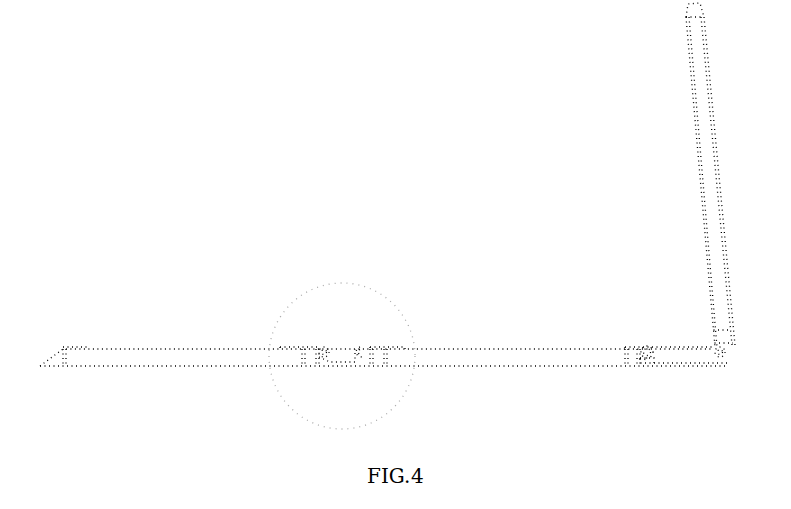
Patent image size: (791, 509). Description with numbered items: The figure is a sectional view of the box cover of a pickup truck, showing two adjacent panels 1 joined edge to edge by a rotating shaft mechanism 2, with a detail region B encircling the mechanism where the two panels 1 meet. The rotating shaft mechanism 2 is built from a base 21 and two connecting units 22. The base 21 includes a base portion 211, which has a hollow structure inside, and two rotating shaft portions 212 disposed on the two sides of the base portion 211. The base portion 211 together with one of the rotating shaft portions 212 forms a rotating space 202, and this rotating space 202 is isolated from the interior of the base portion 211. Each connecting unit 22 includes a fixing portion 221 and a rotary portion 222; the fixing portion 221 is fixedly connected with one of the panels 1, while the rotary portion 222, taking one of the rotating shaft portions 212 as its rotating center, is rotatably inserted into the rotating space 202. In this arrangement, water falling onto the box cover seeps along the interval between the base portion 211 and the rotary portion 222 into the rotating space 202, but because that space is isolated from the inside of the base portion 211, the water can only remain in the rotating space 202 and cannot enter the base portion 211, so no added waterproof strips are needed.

The panel 1 is at (202, 348).
The detail region B is at (305, 298).
The rotating shaft mechanism 2 is at (513, 337).
The base 21 is at (513, 358).
The connecting unit 22 is at (534, 308).
The fixing portion 221 is at (623, 348).
The rotary portion 222 is at (647, 346).
The rotating space 202 is at (643, 358).
The rotating shaft portion 212 is at (650, 363).
The base portion 211 is at (653, 420).